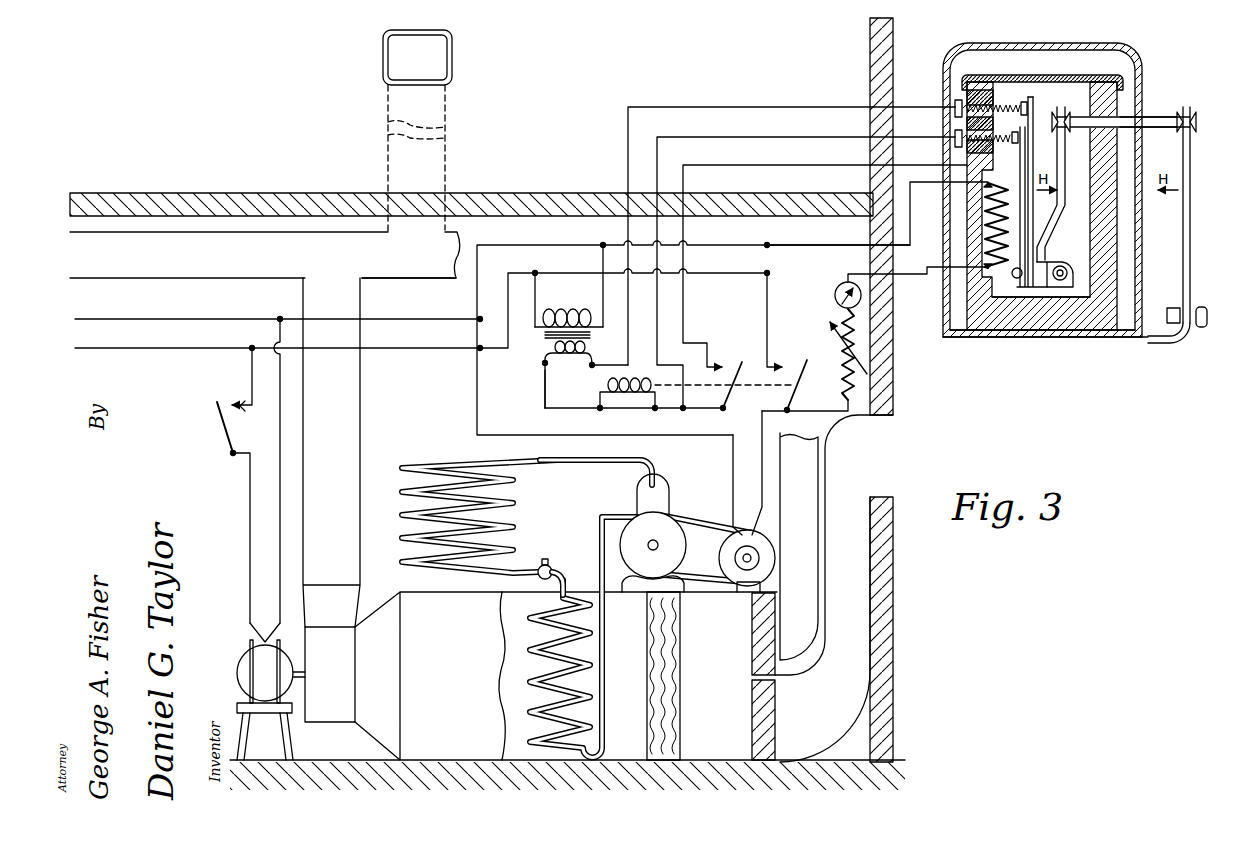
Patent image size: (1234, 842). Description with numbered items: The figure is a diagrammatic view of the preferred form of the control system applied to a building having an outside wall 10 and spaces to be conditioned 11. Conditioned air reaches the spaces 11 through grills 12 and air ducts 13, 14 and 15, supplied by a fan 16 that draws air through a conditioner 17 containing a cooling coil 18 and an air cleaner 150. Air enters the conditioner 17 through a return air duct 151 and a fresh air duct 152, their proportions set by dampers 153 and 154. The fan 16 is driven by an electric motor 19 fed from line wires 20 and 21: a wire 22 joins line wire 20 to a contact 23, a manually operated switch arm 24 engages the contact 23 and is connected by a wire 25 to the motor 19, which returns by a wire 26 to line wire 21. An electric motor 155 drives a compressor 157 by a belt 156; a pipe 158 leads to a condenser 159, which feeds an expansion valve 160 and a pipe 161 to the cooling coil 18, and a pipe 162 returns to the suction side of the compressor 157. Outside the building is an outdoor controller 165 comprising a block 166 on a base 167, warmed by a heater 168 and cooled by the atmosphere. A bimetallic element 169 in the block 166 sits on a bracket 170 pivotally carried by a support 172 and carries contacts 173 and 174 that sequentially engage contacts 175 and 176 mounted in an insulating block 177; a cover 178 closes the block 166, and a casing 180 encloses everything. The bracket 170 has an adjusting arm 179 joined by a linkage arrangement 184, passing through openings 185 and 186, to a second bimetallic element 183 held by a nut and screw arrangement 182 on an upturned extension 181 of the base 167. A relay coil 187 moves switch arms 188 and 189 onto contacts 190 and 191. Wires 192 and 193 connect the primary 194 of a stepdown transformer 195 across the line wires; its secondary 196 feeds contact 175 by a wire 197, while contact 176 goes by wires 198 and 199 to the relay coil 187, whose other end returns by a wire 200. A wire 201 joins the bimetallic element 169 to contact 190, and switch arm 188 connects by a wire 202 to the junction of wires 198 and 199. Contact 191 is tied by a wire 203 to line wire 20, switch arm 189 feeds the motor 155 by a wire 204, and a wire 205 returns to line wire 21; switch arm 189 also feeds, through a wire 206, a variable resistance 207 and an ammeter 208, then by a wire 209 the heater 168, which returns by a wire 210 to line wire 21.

The outside wall 10 is at (897, 390).
The spaces to be conditioned 11 is at (281, 133).
The grills 12 is at (452, 60).
The air duct 13 is at (447, 115).
The air duct 14 is at (398, 280).
The air duct 15 is at (362, 405).
The fan 16 is at (330, 718).
The conditioner 17 is at (405, 594).
The cooling coil 18 is at (540, 652).
The electric motor 19 is at (245, 663).
The line wire 20 is at (215, 349).
The line wire 21 is at (210, 318).
The wire 22 is at (252, 362).
The contact 23 is at (243, 408).
The switch arm 24 is at (224, 430).
The wire 25 is at (250, 542).
The wire 26 is at (279, 460).
The air cleaner 150 is at (648, 660).
The duct 151 is at (806, 627).
The duct 152 is at (820, 723).
The damper 153 is at (752, 652).
The damper 154 is at (752, 717).
The electric motor 155 is at (736, 530).
The belt 156 is at (716, 566).
The compressor 157 is at (650, 498).
The pipe 158 is at (557, 463).
The condenser 159 is at (519, 526).
The expansion valve 160 is at (548, 565).
The pipe 161 is at (565, 588).
The pipe 162 is at (604, 708).
The outdoor controller 165 is at (1134, 342).
The block 166 is at (1020, 322).
The base 167 is at (975, 338).
The heater 168 is at (985, 226).
The bimetallic element 169 is at (1033, 178).
The bracket 170 is at (1060, 266).
The support 172 is at (1060, 300).
The contact 173 is at (1020, 100).
The contact 174 is at (1015, 142).
The contact 175 is at (953, 100).
The contact 176 is at (953, 140).
The insulating block 177 is at (967, 123).
The cover 178 is at (1024, 80).
The adjusting arm 179 is at (1062, 105).
The casing 180 is at (950, 56).
The upturned extension 181 is at (1192, 342).
The nut and screw arrangement 182 is at (1203, 306).
The bimetallic element 183 is at (1190, 226).
The linkage arrangement 184 is at (1150, 118).
The opening 185 is at (1140, 129).
The opening 186 is at (1105, 115).
The relay coil 187 is at (696, 400).
The switch arm 188 is at (723, 385).
The switch arm 189 is at (792, 388).
The contact 190 is at (720, 364).
The contact 191 is at (781, 364).
The wire 192 is at (540, 292).
The wire 193 is at (603, 258).
The primary 194 is at (569, 310).
The stepdown transformer 195 is at (545, 336).
The secondary 196 is at (570, 358).
The wire 197 is at (628, 320).
The wire 198 is at (657, 330).
The wire 199 is at (680, 411).
The wire 200 is at (545, 378).
The wire 201 is at (683, 322).
The wire 202 is at (700, 410).
The wire 203 is at (767, 314).
The wire 204 is at (765, 468).
The wire 205 is at (733, 470).
The wire 206 is at (814, 412).
The variable resistance 207 is at (840, 372).
The ammeter 208 is at (837, 292).
The wire 209 is at (924, 278).
The wire 210 is at (812, 246).